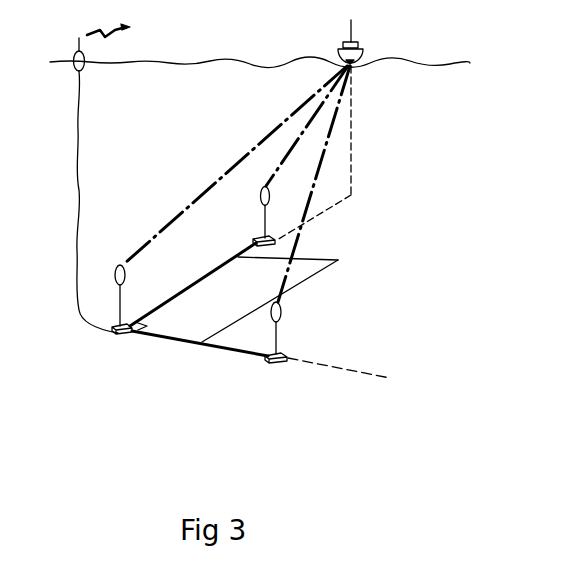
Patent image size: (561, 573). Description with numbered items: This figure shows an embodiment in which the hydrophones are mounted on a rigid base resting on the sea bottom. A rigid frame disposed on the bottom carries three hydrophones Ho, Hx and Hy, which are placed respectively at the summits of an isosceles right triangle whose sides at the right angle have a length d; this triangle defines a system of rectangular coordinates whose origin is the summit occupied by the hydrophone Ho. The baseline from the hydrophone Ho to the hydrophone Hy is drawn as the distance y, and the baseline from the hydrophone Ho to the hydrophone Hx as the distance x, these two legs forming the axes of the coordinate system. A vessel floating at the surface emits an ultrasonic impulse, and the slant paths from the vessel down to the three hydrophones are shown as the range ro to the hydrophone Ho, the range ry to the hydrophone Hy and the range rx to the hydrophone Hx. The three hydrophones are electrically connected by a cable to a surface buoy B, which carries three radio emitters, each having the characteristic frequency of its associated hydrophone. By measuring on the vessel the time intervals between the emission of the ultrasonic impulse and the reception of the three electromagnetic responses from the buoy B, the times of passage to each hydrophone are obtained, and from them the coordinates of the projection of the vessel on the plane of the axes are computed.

The surface buoy B is at (85, 47).
The hydrophone Ho is at (118, 299).
The hydrophone Hy is at (255, 217).
The hydrophone Hx is at (285, 332).
The range from source to Ho ro is at (235, 165).
The range from source to Hy ry is at (302, 126).
The range from source to Hx rx is at (313, 184).
The baseline distance x is at (200, 343).
The baseline distance y is at (193, 284).